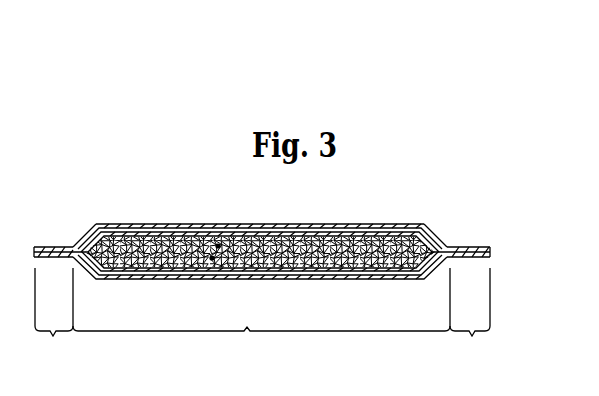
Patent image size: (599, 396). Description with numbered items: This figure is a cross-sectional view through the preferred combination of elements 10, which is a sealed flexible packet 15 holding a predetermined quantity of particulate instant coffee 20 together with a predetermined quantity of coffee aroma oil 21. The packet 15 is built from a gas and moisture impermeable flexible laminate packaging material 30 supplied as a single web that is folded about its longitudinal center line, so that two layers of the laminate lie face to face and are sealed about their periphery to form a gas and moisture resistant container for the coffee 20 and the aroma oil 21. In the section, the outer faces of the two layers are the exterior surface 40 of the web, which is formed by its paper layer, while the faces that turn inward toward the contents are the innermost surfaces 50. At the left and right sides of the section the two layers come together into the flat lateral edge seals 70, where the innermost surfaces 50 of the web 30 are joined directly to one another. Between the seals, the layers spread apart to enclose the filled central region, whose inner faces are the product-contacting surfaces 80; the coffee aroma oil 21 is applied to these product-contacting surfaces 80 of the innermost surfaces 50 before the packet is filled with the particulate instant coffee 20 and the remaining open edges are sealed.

The combination of elements 10 is at (120, 202).
The sealed flexible packet 15 is at (489, 249).
The particulate instant coffee 20 is at (285, 248).
The coffee aroma oil 21 is at (145, 226).
The laminate packaging material 30 is at (419, 228).
The exterior surface 40 is at (354, 228).
The innermost surfaces 50 is at (219, 245).
The lateral edge seals 70 is at (262, 317).
The product-contacting surfaces 80 is at (261, 345).